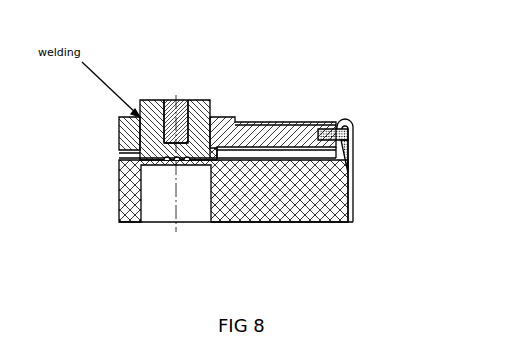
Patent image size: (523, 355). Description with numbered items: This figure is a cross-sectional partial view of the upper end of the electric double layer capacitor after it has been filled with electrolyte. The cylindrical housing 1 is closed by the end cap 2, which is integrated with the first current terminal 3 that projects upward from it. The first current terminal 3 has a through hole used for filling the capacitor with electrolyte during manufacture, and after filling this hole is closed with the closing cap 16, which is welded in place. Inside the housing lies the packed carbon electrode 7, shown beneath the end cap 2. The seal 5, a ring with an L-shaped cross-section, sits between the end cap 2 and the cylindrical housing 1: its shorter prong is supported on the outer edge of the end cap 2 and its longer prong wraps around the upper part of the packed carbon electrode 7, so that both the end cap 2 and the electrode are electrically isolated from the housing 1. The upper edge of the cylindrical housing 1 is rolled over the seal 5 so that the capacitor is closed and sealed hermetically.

The cylindrical housing 1 is at (352, 198).
The end cap 2 is at (256, 136).
The first current terminal 3 is at (196, 117).
The seal 5 is at (346, 139).
The packed carbon electrode 7 is at (305, 197).
The closing cap 16 is at (182, 106).